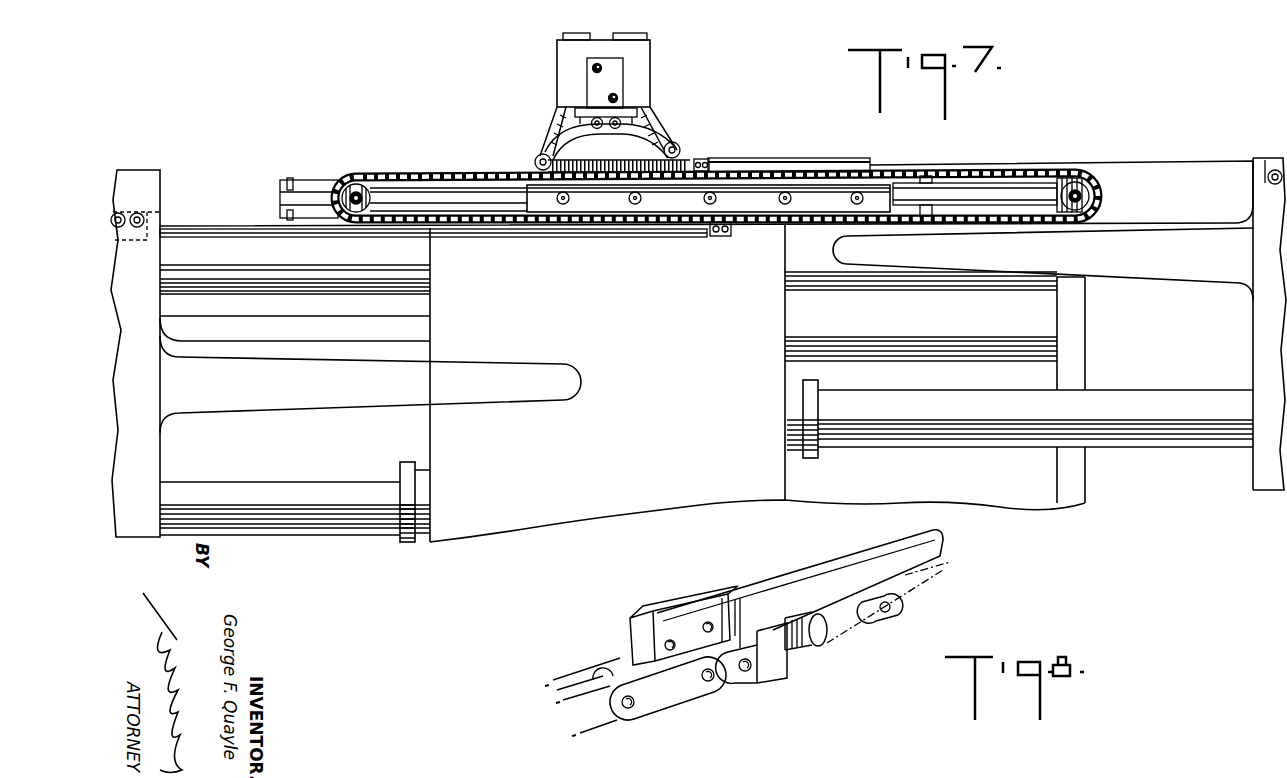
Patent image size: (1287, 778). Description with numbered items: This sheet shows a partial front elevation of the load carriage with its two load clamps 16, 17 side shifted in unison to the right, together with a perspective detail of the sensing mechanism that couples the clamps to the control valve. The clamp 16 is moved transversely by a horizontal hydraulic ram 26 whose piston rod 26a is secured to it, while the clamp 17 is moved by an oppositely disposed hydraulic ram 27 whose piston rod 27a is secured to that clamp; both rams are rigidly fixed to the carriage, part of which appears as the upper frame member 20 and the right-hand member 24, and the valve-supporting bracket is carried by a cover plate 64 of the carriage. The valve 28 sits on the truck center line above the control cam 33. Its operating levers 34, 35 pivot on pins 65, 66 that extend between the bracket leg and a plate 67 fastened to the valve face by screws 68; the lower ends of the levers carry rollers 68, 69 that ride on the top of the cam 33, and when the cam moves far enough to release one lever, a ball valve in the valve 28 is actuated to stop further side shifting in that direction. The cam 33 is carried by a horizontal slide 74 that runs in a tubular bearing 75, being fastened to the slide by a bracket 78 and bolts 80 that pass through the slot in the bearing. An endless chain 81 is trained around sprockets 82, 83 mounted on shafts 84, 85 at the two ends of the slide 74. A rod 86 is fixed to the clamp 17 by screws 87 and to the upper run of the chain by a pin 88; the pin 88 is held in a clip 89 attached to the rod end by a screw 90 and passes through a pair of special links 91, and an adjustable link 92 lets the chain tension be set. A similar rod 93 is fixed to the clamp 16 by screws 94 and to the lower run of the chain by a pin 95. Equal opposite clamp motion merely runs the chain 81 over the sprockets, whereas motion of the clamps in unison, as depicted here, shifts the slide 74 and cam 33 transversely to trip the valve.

In FIG. 7, the load clamp 16 is at (150, 463).
In FIG. 7, the load clamp 17 is at (1256, 467).
In FIG. 7, the upper frame beam 20 is at (302, 305).
In FIG. 7, the right upper shaft 24 is at (900, 284).
In FIG. 7, the hydraulic ram 26 is at (425, 538).
In FIG. 7, the piston rod 26a is at (311, 490).
In FIG. 7, the hydraulic ram 27 is at (790, 448).
In FIG. 7, the piston rod 27a is at (963, 437).
In FIG. 7, the valve 28 is at (648, 62).
In FIG. 7, the control cam 33 is at (777, 158).
In FIG. 7, the operating lever 34 is at (557, 137).
In FIG. 7, the operating lever 35 is at (640, 135).
In FIG. 7, the cover plate 64 is at (528, 513).
In FIG. 7, the pin 65 is at (590, 120).
In FIG. 7, the pin 66 is at (621, 121).
In FIG. 7, the plate 67 is at (617, 83).
In FIG. 7, the screws 68 is at (608, 98).
In FIG. 7, the roller 69 is at (680, 146).
In FIG. 7, the horizontal slide 74 is at (978, 190).
In FIG. 7, the tubular bearing 75 is at (310, 191).
In FIG. 7, the bracket 78 is at (766, 212).
In FIG. 7, the bolts 80 is at (633, 204).
In FIG. 7, the endless chain 81 is at (462, 176).
In FIG. 8, the endless chain 81 is at (598, 668).
In FIG. 7, the sprocket 82 is at (378, 194).
In FIG. 7, the sprocket 83 is at (1090, 188).
In FIG. 7, the shaft 84 is at (357, 191).
In FIG. 7, the shaft 85 is at (1090, 200).
In FIG. 7, the rod 86 is at (1172, 164).
In FIG. 8, the rod 86 is at (780, 589).
In FIG. 7, the screws 87 is at (1266, 178).
In FIG. 7, the pin 88 is at (701, 159).
In FIG. 8, the pin 88 is at (670, 640).
In FIG. 7, the clip 89 is at (710, 160).
In FIG. 8, the clip 89 is at (692, 628).
In FIG. 8, the screw 90 is at (712, 622).
In FIG. 8, the special links 91 is at (683, 698).
In FIG. 8, the adjustable link 92 is at (825, 652).
In FIG. 7, the rod 93 is at (218, 231).
In FIG. 7, the screws 94 is at (136, 216).
In FIG. 7, the pin 95 is at (722, 237).